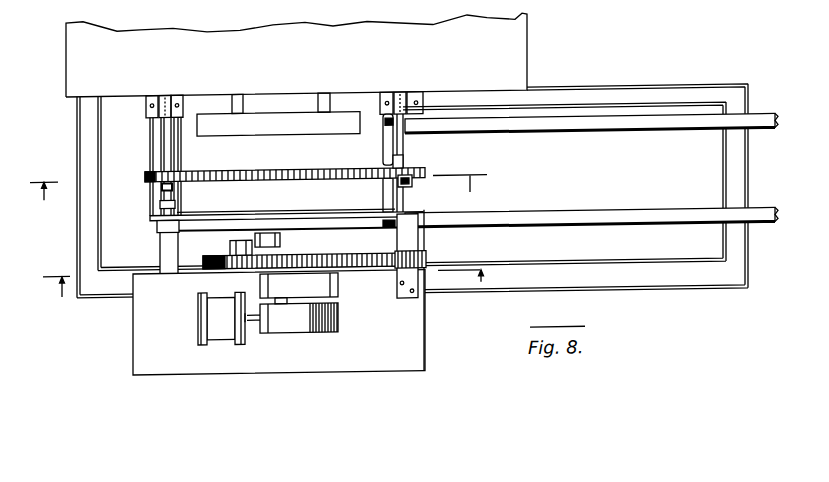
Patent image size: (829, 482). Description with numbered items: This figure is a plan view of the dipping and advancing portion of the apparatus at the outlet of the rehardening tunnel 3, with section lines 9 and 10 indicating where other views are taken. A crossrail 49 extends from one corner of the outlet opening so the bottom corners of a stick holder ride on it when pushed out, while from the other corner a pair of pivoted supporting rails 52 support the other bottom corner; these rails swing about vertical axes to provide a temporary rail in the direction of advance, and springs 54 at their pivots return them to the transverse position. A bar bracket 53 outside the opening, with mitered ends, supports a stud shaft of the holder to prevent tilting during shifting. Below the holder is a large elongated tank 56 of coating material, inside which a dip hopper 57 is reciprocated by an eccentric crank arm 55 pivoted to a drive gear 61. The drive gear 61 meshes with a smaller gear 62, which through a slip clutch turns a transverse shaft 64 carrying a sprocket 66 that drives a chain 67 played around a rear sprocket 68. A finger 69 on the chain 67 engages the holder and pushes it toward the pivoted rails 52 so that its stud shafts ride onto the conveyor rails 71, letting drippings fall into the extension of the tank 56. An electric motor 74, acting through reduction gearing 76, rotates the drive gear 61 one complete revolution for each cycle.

The rehardening tunnel 3 is at (517, 44).
The bar bracket 53 is at (292, 120).
The springs 54 is at (390, 223).
The pivoted supporting rails 52 is at (385, 191).
The transverse shaft 64 is at (407, 148).
The finger 69 is at (400, 167).
The sprocket 66 is at (412, 182).
The crossrail 49 is at (180, 154).
The chain 67 is at (302, 170).
The sprocket 68 is at (160, 182).
The tank 56 is at (557, 180).
The conveyor rails 71 is at (622, 213).
The eccentric crank arm 55 is at (283, 236).
The dip hopper 57 is at (337, 228).
The smaller gear 62 is at (430, 259).
The drive gear 61 is at (372, 265).
The electric motor 74 is at (217, 337).
The reduction gearing 76 is at (338, 317).
The section line 10- 10 is at (258, 178).
The section line 9- 9 is at (269, 281).